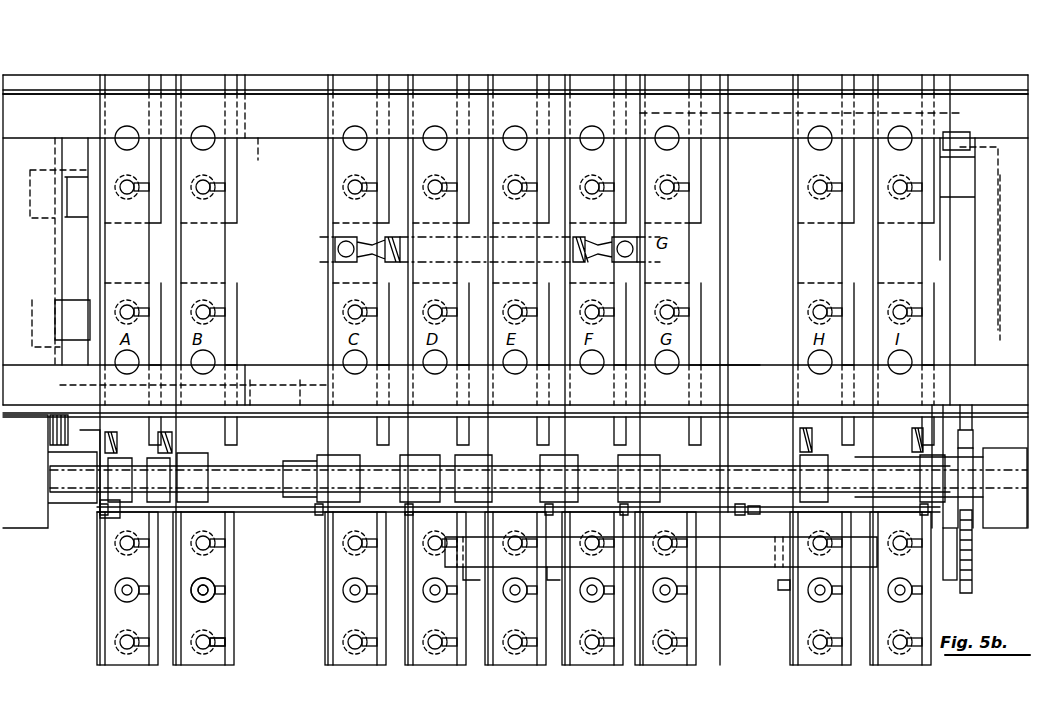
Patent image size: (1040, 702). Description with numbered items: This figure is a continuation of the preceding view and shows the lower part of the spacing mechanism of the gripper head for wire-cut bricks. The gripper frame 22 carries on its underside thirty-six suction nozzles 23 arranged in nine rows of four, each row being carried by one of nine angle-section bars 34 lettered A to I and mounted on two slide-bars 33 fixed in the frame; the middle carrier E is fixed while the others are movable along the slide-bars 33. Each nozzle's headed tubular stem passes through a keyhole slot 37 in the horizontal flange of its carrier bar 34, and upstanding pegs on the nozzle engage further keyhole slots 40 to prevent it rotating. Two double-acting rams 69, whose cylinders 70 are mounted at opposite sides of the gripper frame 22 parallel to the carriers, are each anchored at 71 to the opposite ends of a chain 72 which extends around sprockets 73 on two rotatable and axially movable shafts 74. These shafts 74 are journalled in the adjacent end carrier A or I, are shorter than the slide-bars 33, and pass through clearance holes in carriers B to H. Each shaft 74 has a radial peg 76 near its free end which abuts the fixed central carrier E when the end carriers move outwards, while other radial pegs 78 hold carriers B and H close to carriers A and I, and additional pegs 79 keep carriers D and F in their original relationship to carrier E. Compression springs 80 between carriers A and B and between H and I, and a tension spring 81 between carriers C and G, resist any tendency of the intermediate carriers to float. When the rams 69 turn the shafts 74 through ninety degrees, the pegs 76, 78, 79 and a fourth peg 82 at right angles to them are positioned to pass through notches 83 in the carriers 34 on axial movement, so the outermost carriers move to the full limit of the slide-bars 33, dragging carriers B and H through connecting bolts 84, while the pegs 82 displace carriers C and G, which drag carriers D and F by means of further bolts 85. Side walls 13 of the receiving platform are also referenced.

The side walls 13 is at (956, 580).
The gripper frame 22 is at (738, 366).
The suction nozzles 23 is at (378, 160).
The slide-bars 33 is at (538, 484).
The angle-section bars 34 is at (215, 275).
The keyhole slot 37 is at (205, 600).
The keyhole slots 40 is at (215, 641).
The double-acting rams 69 is at (62, 126).
The cylinders 70 is at (68, 265).
The anchorage 71 is at (975, 440).
The chain 72 is at (60, 322).
The sprockets 73 is at (52, 430).
The shafts 74 is at (779, 118).
The radial peg 76 is at (476, 576).
The radial pegs 78 is at (782, 586).
The pegs 79 is at (556, 576).
The compression springs 80 is at (170, 440).
The tension spring 81 is at (578, 240).
The fourth peg 82 is at (630, 556).
The notches 83 is at (750, 528).
The connecting bolts 84 is at (120, 510).
The bolts 85 is at (340, 510).